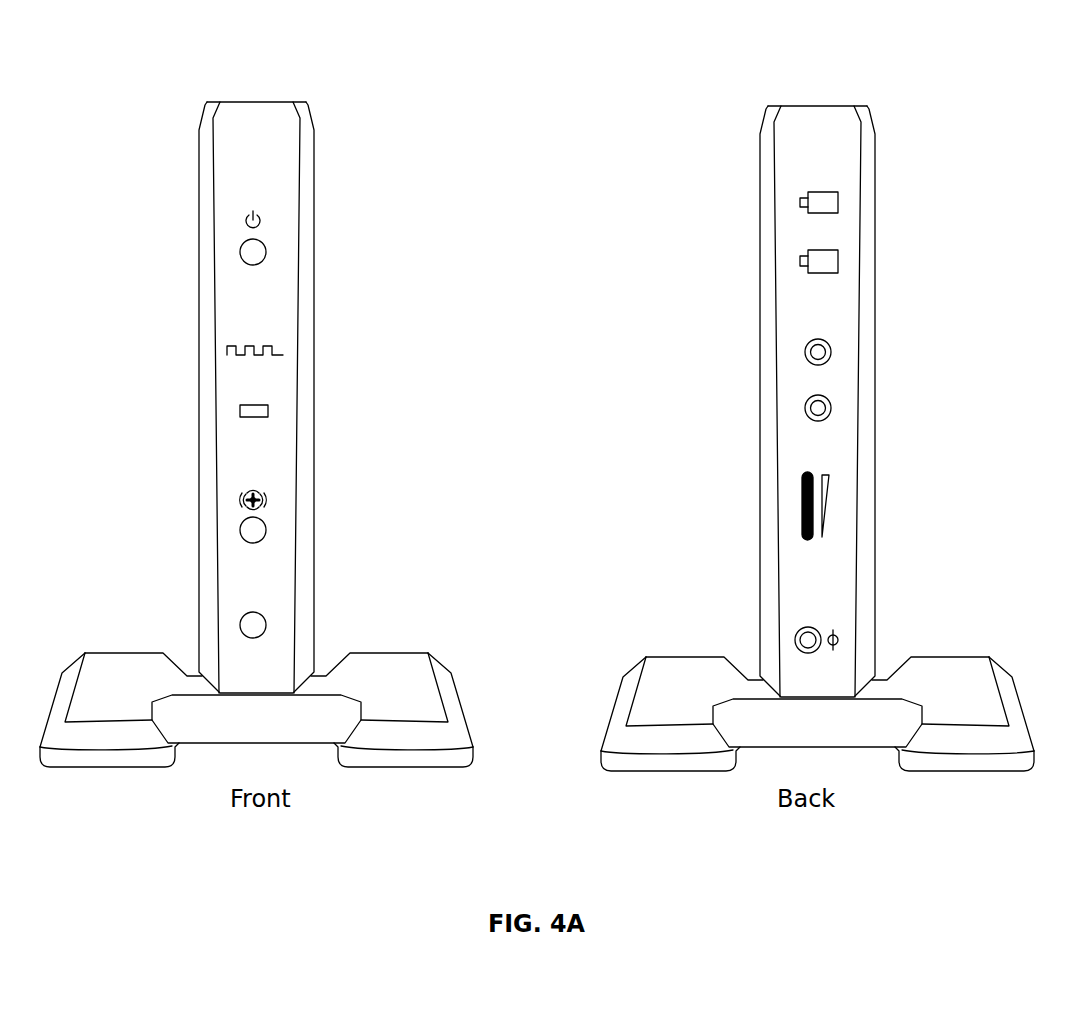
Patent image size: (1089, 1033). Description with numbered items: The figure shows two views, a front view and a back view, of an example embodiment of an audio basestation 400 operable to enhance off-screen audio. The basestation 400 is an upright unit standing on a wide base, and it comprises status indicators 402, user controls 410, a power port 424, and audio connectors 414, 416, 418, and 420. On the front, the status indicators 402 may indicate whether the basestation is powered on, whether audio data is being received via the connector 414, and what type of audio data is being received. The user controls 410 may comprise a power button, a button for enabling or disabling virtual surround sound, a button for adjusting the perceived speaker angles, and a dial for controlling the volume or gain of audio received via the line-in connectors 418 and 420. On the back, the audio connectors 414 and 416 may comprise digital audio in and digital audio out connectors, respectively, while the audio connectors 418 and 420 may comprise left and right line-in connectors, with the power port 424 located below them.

The audio basestation 400 is at (168, 82).
The status indicators 402 is at (247, 213).
The user controls 410 is at (250, 265).
The audio connector 414 is at (822, 191).
The audio connector 416 is at (822, 250).
The audio connector 418 is at (815, 340).
The audio connector 420 is at (815, 397).
The power port 424 is at (820, 616).